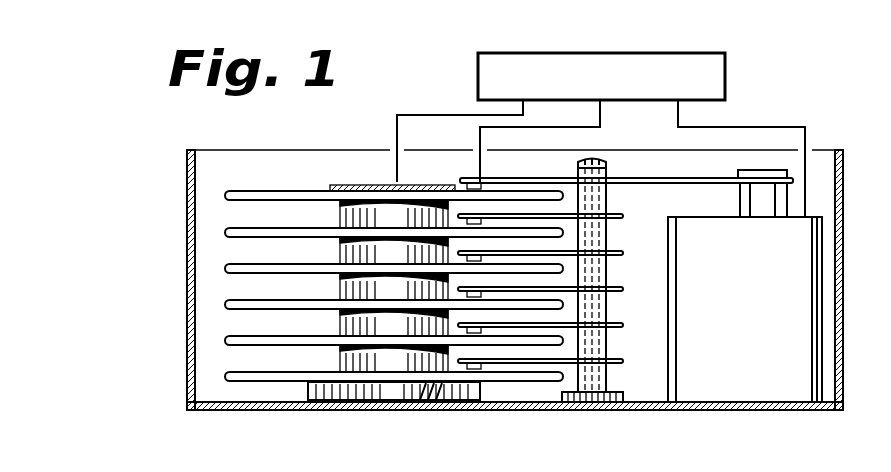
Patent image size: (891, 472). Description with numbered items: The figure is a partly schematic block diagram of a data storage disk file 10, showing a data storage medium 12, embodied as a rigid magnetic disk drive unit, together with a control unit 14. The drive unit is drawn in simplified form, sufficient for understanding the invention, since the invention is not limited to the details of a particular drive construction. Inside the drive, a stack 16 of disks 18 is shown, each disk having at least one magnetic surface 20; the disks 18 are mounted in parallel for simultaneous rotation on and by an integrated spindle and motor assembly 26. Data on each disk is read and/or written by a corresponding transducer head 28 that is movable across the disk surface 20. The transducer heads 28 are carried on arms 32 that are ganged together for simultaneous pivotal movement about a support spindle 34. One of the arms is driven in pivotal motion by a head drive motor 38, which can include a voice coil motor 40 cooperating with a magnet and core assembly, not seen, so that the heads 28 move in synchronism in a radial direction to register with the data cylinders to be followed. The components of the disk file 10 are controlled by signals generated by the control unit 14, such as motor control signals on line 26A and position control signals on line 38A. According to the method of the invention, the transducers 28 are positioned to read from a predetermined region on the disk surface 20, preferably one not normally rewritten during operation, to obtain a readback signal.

The data storage disk file 10 is at (815, 99).
The data storage medium 12 is at (351, 121).
The control unit 14 is at (728, 80).
The stack 16 is at (279, 176).
The disks 18 is at (226, 304).
The magnetic surface 20 is at (243, 190).
The integrated spindle and motor assembly 26 is at (392, 357).
The line 26A is at (430, 115).
The transducer head 28 is at (470, 182).
The arms 32 is at (612, 257).
The support spindle 34 is at (607, 372).
The head drive motor 38 is at (755, 382).
The line 38A is at (719, 126).
The voice coil motor 40 is at (787, 208).